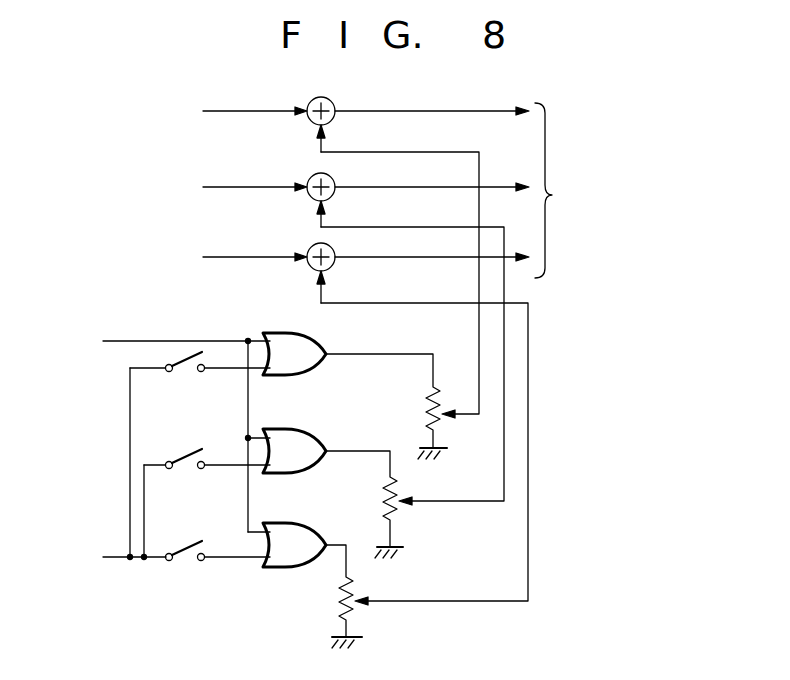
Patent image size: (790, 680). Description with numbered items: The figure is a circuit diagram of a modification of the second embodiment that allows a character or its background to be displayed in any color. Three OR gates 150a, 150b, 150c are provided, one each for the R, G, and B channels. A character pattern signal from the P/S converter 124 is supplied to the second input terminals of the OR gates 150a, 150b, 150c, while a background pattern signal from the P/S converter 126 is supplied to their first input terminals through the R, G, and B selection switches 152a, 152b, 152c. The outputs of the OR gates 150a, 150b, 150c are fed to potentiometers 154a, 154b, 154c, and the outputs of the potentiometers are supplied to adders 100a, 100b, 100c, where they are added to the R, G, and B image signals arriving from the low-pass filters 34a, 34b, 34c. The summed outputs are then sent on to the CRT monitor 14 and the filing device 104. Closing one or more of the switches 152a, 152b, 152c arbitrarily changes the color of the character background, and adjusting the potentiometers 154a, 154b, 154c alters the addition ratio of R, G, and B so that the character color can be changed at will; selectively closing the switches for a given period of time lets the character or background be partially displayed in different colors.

The low pass filter 34a is at (187, 113).
The low pass filter 34b is at (187, 184).
The low pass filter 34c is at (187, 252).
The adder 100a is at (333, 103).
The adder 100b is at (309, 177).
The adder 100c is at (306, 246).
The CRT monitor 14 is at (617, 190).
The filing device 104 is at (617, 221).
The P/S converter 124 is at (152, 340).
The P/S converter 126 is at (100, 475).
The OR gate 150a is at (318, 337).
The OR gate 150b is at (318, 438).
The OR gate 150c is at (302, 524).
The R selection switch 152a is at (178, 372).
The G selection switch 152b is at (179, 469).
The B selection switch 152c is at (177, 563).
The potentiometer 154a is at (426, 405).
The potentiometer 154b is at (397, 507).
The potentiometer 154c is at (353, 607).